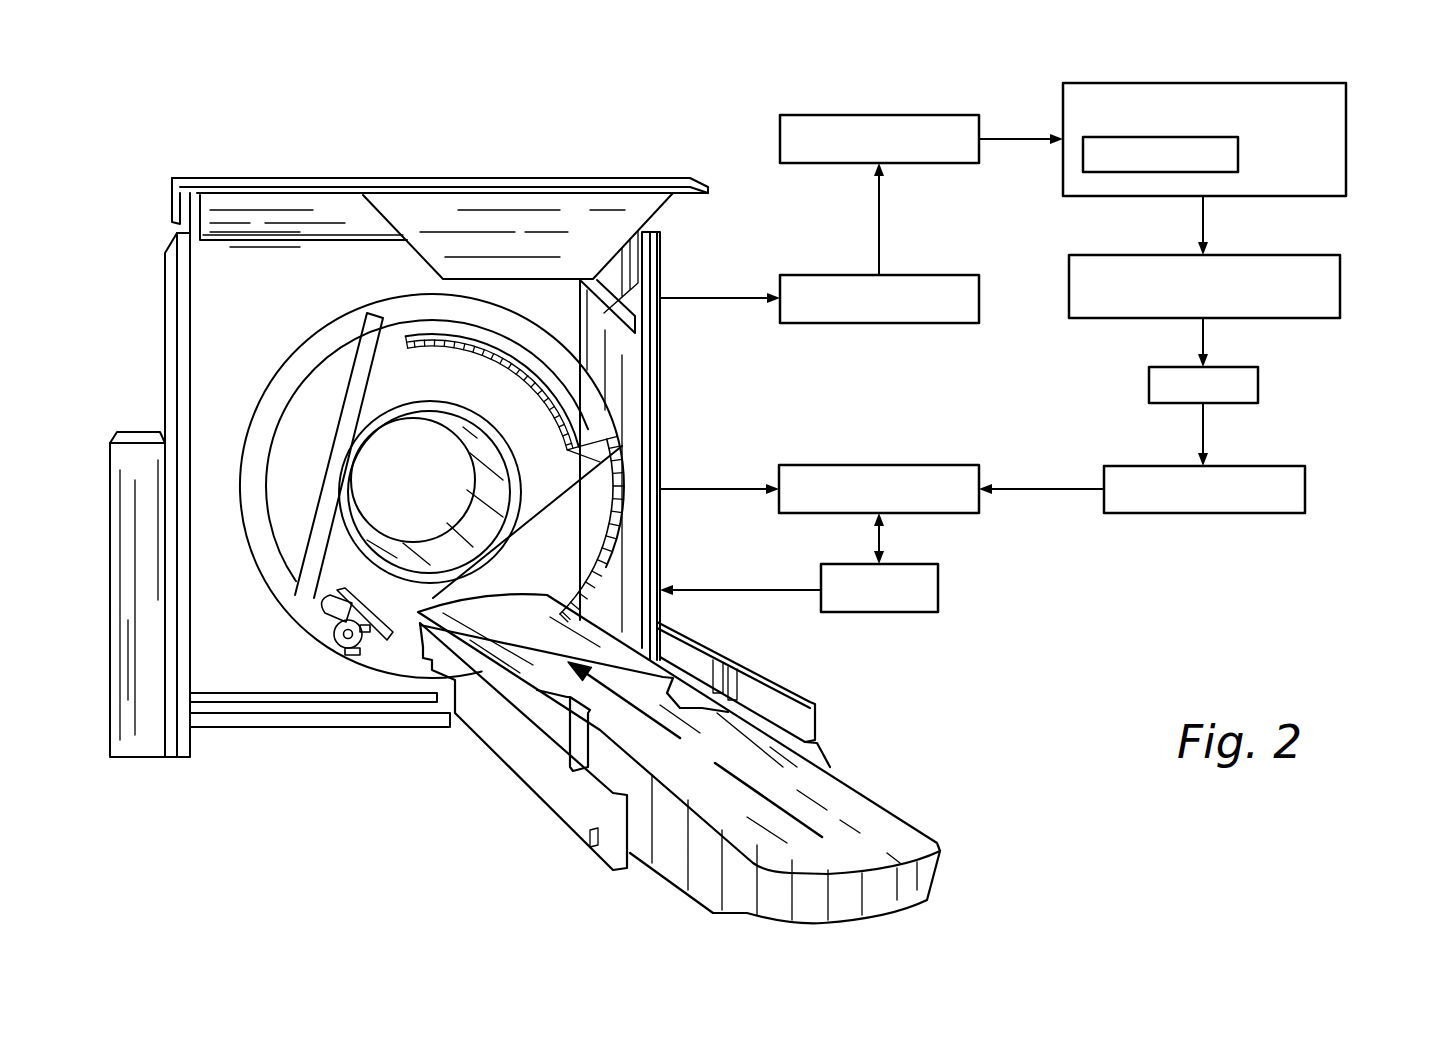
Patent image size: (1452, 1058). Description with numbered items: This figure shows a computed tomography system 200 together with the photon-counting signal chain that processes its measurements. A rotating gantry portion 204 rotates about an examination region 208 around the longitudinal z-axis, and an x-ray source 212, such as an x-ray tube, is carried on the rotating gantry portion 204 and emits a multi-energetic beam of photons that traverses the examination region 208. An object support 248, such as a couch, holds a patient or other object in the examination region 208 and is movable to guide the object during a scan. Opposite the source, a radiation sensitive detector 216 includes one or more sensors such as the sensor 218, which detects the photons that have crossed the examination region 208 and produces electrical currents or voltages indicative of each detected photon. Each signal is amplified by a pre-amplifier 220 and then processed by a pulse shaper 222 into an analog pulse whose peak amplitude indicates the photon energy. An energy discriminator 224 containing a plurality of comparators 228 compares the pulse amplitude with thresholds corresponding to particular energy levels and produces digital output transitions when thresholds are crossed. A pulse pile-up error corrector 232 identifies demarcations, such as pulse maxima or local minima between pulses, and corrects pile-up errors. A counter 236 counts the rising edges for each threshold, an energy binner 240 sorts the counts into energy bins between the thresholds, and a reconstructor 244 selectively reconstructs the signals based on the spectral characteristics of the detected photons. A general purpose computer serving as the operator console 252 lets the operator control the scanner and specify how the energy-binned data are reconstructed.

The computed tomography (CT) system 200 is at (201, 115).
The rotating gantry portion 204 is at (388, 368).
The examination region 208 is at (425, 483).
The x-ray source 212 is at (343, 645).
The radiation sensitive detector 216 is at (574, 443).
The sensor 218 is at (518, 388).
The pre-amplifier 220 is at (922, 275).
The pulse shaper 222 is at (922, 115).
The energy discriminator 224 is at (1346, 142).
The comparators 228 is at (1238, 160).
The pulse pile-up error corrector 232 is at (1340, 290).
The counter 236 is at (1149, 385).
The energy binner 240 is at (1253, 466).
The reconstructor 244 is at (895, 465).
The object support 248 is at (876, 835).
The operator console 252 is at (938, 588).